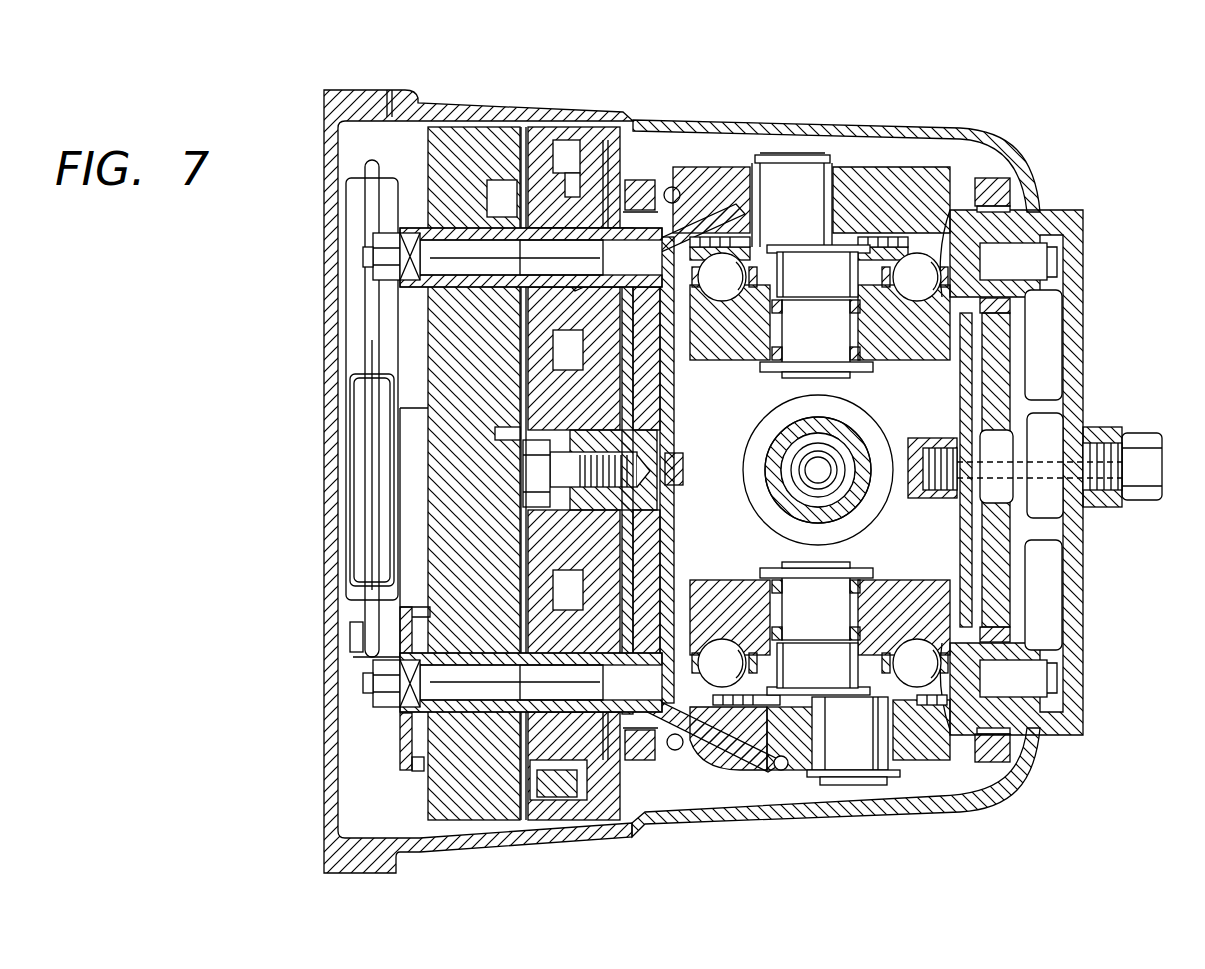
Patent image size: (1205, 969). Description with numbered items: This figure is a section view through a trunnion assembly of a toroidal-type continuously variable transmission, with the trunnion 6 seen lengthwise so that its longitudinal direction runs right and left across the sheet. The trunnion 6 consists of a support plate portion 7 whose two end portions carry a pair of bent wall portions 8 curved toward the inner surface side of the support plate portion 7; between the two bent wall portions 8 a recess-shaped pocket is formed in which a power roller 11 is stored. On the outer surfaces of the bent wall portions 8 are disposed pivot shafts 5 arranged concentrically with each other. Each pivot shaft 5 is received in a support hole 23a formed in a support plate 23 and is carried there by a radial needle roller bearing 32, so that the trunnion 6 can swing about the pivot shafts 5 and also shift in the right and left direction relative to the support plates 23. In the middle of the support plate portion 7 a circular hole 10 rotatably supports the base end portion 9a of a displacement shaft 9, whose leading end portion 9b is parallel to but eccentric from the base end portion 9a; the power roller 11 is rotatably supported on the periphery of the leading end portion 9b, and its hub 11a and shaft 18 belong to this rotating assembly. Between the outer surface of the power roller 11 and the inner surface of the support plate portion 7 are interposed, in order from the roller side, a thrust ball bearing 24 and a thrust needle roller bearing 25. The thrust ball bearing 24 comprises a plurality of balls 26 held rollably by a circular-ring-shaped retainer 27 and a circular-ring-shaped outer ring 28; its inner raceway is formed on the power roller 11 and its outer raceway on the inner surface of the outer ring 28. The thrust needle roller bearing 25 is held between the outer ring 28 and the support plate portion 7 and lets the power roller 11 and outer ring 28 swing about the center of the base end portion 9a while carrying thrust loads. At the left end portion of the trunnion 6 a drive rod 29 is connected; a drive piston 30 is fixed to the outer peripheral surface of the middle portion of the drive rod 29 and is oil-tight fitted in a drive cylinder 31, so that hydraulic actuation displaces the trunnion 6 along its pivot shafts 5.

The pivot shaft 5 is at (634, 175).
The trunnion 6 is at (968, 165).
The support plate portion 7 is at (925, 200).
The bent wall portion 8 is at (665, 188).
The displacement shaft 9 is at (837, 273).
The base end portion 9a is at (786, 160).
The leading end portion 9b is at (805, 352).
The circular hole 10 is at (775, 178).
The power roller 11 is at (985, 360).
The bearing support 11a is at (705, 305).
The output shaft 18 is at (767, 453).
The support plate 23 is at (660, 523).
The support hole 23a is at (1017, 310).
The thrust ball bearing 24 is at (908, 288).
The thrust needle roller bearing 25 is at (872, 210).
The ball 26 is at (688, 240).
The retainer 27 is at (705, 215).
The outer ring 28 is at (962, 210).
The drive rod 29 is at (452, 240).
The drive piston 30 is at (553, 150).
The drive cylinder 31 is at (521, 160).
The radial needle roller bearing 32 is at (1010, 204).